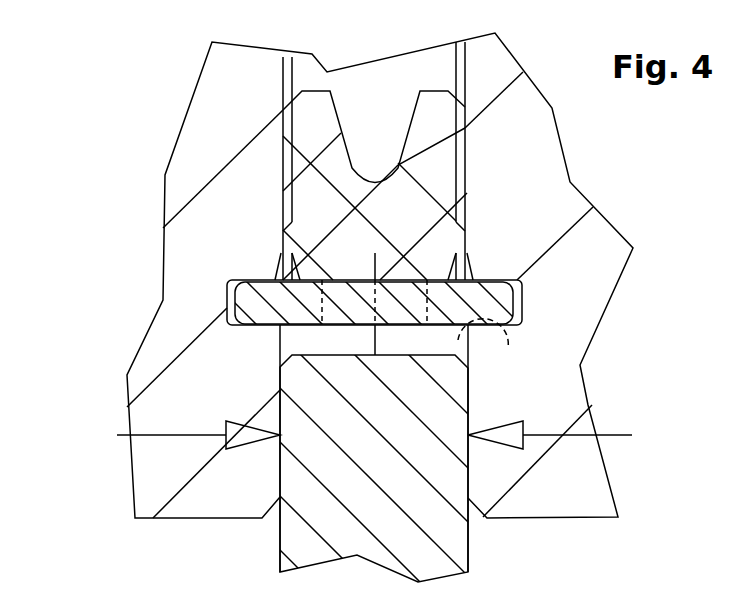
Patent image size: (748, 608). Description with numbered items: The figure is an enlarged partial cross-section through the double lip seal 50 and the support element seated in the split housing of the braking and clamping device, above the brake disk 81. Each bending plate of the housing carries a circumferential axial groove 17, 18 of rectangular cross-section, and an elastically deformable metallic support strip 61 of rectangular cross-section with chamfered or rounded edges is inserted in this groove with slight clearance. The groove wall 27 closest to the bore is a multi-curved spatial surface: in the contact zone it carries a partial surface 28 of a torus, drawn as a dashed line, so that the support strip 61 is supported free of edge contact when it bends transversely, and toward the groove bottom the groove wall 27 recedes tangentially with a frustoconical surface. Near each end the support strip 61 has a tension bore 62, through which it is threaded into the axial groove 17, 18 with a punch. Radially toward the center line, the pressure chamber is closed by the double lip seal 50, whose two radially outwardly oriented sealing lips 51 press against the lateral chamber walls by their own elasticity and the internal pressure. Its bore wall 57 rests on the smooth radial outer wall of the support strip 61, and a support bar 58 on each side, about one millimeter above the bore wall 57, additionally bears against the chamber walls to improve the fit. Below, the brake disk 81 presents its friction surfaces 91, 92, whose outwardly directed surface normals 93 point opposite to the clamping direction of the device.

The axial groove 17 is at (520, 282).
The axial groove 18 is at (227, 287).
The groove wall 27 is at (513, 328).
The partial surface of a torus 28 is at (507, 358).
The double lip seal 50 is at (276, 180).
The sealing lips 51 is at (306, 112).
The bore wall 57 is at (330, 283).
The support bar 58 is at (286, 241).
The support strip 61 is at (493, 304).
The tension bore 62 is at (561, 219).
The brake disk 81 is at (448, 532).
The friction surface 91 is at (281, 458).
The friction surface 92 is at (467, 462).
The surface normals 93 is at (192, 435).